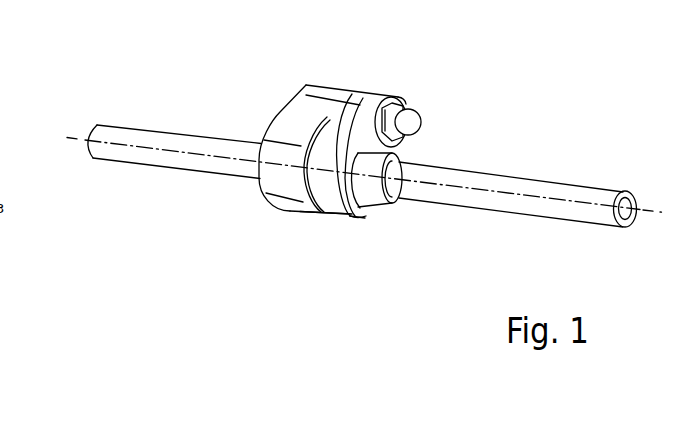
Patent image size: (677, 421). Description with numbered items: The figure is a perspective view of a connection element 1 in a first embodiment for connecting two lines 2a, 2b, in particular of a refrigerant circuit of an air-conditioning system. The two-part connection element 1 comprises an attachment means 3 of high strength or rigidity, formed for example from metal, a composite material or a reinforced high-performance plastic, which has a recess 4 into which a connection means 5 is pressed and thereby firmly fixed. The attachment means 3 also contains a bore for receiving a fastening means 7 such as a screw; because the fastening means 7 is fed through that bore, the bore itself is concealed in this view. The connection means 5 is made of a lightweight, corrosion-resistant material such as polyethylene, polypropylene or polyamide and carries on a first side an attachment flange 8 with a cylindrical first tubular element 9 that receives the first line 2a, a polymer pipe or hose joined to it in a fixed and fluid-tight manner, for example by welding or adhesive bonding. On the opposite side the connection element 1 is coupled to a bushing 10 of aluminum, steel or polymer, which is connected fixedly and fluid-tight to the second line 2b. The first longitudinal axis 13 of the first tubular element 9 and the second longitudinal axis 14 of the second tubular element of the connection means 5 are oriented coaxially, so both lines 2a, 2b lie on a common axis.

The connection element 1 is at (387, 73).
The first line 2a is at (526, 181).
The second line 2b is at (140, 135).
The attachment means 3 is at (368, 95).
The recess 4 is at (367, 201).
The connection means 5 is at (338, 208).
The fastening means 7 is at (412, 122).
The attachment flange 8 is at (348, 184).
The first tubular element 9 is at (372, 192).
The bushing 10 is at (305, 98).
The first longitudinal axis 13 is at (643, 203).
The second longitudinal axis 14 is at (73, 133).